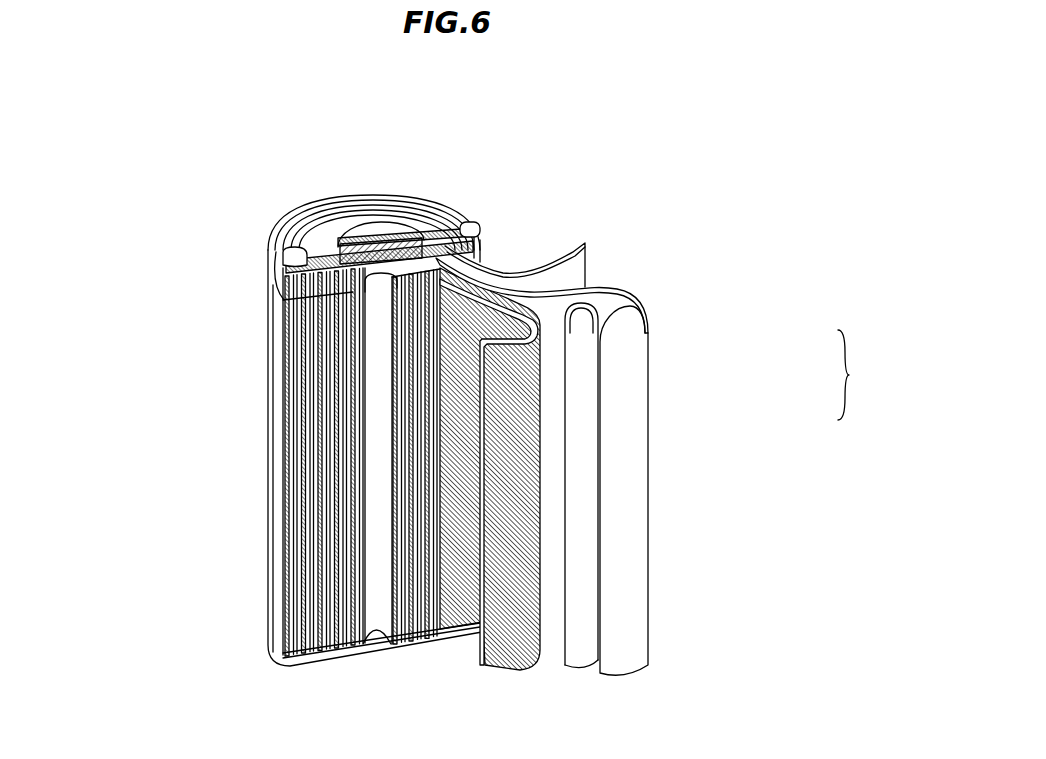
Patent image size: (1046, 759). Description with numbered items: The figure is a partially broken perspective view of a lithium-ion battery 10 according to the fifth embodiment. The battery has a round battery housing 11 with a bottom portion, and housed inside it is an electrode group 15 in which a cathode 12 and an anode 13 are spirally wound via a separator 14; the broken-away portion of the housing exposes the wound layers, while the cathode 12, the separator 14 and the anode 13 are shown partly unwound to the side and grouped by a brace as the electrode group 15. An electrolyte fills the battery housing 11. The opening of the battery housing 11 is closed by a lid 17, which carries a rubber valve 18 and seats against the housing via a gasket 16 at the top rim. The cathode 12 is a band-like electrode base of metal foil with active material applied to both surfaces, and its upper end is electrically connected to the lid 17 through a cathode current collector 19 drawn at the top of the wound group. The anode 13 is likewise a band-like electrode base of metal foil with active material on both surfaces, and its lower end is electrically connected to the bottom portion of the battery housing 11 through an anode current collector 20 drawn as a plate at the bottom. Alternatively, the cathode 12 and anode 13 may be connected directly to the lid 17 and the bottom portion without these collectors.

The lithium-ion battery 10 is at (624, 132).
The battery housing 11 is at (273, 505).
The cathode 12 is at (552, 440).
The anode 13 is at (662, 352).
The separator 14 is at (580, 265).
The electrode group 15 is at (579, 462).
The gasket 16 is at (276, 252).
The lid 17 is at (368, 233).
The rubber valve 18 is at (396, 243).
The cathode current collector 19 is at (428, 238).
The anode current collector 20 is at (373, 647).